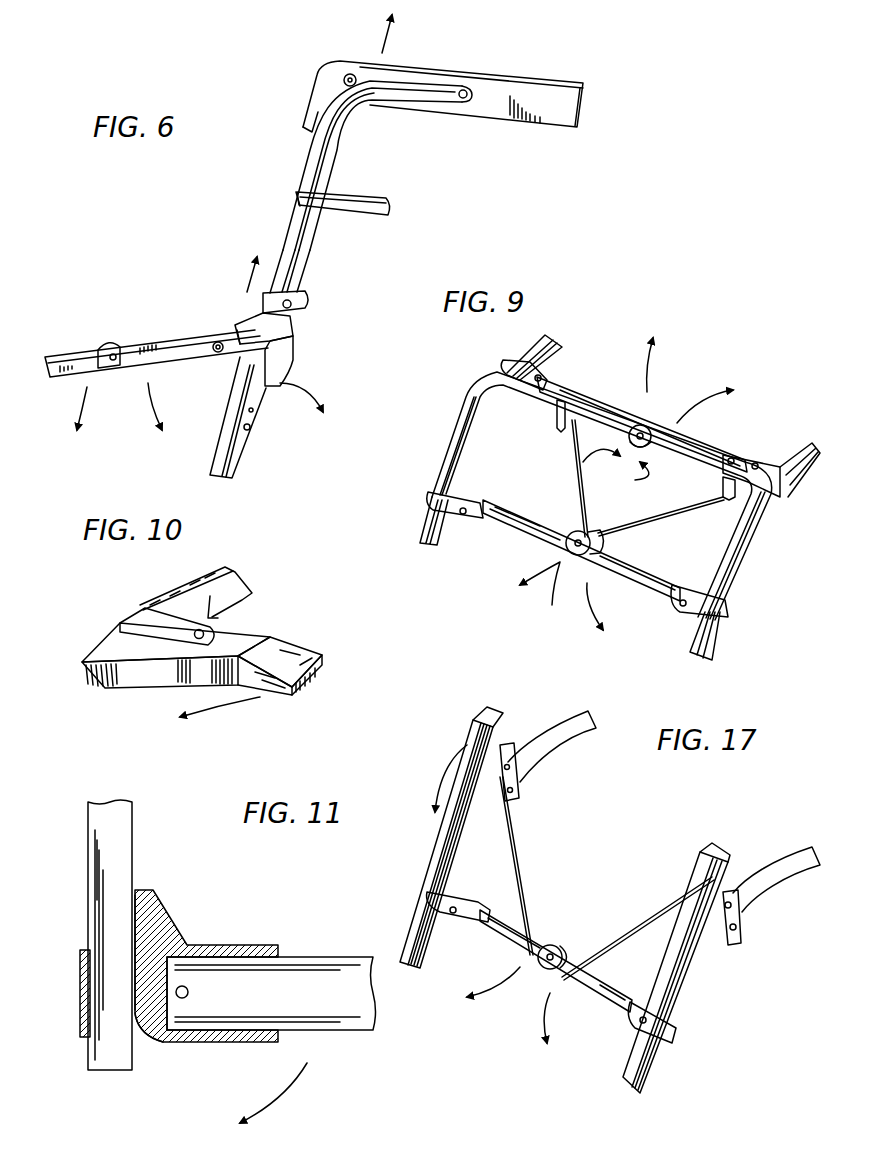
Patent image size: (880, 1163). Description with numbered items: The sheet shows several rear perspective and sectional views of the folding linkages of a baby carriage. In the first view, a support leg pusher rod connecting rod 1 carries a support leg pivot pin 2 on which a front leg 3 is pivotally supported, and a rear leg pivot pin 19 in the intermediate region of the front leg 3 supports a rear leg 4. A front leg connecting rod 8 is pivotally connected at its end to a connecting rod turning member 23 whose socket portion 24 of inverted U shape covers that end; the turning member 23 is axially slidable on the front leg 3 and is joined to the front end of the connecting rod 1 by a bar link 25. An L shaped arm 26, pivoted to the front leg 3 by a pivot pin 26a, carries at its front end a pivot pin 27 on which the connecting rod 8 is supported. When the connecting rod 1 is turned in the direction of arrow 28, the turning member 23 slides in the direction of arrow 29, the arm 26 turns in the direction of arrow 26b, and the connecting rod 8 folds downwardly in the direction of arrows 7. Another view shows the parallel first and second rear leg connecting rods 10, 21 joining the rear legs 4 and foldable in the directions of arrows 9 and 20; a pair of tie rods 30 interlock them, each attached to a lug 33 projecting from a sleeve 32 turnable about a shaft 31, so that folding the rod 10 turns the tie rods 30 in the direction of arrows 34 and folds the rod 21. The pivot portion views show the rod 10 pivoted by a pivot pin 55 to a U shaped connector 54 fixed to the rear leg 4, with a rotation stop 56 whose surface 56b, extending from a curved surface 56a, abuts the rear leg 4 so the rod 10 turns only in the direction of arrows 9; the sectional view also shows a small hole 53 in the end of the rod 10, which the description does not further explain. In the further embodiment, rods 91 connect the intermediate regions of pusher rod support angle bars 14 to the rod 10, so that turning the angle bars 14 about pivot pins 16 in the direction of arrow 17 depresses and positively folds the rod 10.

In FIG. 6, the support leg pusher rod connecting rod 1 is at (523, 78).
In FIG. 6, the support leg pivot pin 2 is at (461, 99).
In FIG. 6, the front leg 3 is at (283, 240).
In FIG. 6, the rear leg 4 is at (373, 200).
In FIG. 9, the rear leg 4 is at (420, 517).
In FIG. 10, the rear leg 4 is at (208, 572).
In FIG. 11, the rear leg 4 is at (132, 832).
In FIG. 17, the rear leg 4 is at (460, 843).
In FIG. 6, the arrows 7 is at (88, 410).
In FIG. 6, the front leg connecting rod 8 is at (150, 343).
In FIG. 9, the arrows 9 is at (610, 602).
In FIG. 10, the arrows 9 is at (233, 707).
In FIG. 11, the arrows 9 is at (297, 1100).
In FIG. 17, the arrows 9 is at (493, 995).
In FIG. 9, the first rear leg connecting rod 10 is at (520, 533).
In FIG. 10, the first rear leg connecting rod 10 is at (308, 653).
In FIG. 11, the first rear leg connecting rod 10 is at (343, 953).
In FIG. 17, the first rear leg connecting rod 10 is at (490, 943).
In FIG. 17, the pusher rod support angle bar 14 is at (503, 728).
In FIG. 17, the pivot pin 16 is at (515, 768).
In FIG. 17, the arrow 17 is at (440, 768).
In FIG. 6, the rear leg pivot pin 19 is at (297, 197).
In FIG. 9, the arrows 20 is at (650, 368).
In FIG. 9, the second rear leg connecting rod 21 is at (597, 400).
In FIG. 6, the connecting rod turning member 23 is at (293, 318).
In FIG. 6, the socket portion 24 is at (240, 323).
In FIG. 6, the bar link 25 is at (318, 236).
In FIG. 6, the L shaped arm 26 is at (280, 343).
In FIG. 6, the pivot pin 26a is at (250, 430).
In FIG. 6, the arrow 26b is at (300, 386).
In FIG. 6, the pivot pin 27 is at (220, 353).
In FIG. 6, the arrow 28 is at (386, 38).
In FIG. 6, the arrow 29 is at (250, 272).
In FIG. 9, the tie rod 30 is at (577, 478).
In FIG. 9, the shaft 31 is at (552, 383).
In FIG. 9, the sleeve 32 is at (556, 424).
In FIG. 9, the lug 33 is at (578, 420).
In FIG. 9, the arrows 34 is at (610, 502).
In FIG. 11, the hole 53 is at (182, 998).
In FIG. 9, the U shaped connector 54 is at (455, 505).
In FIG. 10, the U shaped connector 54 is at (140, 612).
In FIG. 11, the U shaped connector 54 is at (80, 1007).
In FIG. 17, the U shaped connector 54 is at (458, 907).
In FIG. 10, the pivot pin 55 is at (208, 630).
In FIG. 9, the rotation stop 56 is at (699, 601).
In FIG. 10, the rotation stop 56 is at (178, 660).
In FIG. 11, the rotation stop 56 is at (170, 930).
In FIG. 17, the rotation stop 56 is at (652, 1022).
In FIG. 11, the curved surface 56a is at (148, 1038).
In FIG. 11, the surface 56b is at (135, 928).
In FIG. 17, the rod 91 is at (520, 855).